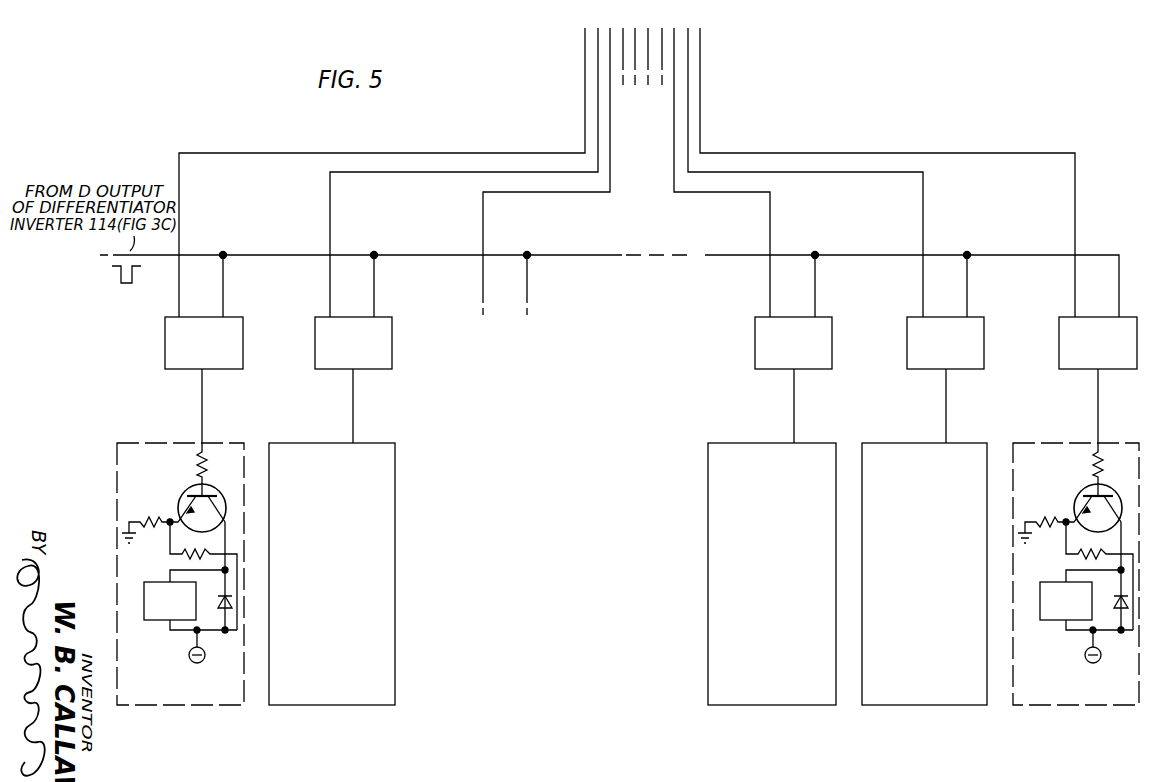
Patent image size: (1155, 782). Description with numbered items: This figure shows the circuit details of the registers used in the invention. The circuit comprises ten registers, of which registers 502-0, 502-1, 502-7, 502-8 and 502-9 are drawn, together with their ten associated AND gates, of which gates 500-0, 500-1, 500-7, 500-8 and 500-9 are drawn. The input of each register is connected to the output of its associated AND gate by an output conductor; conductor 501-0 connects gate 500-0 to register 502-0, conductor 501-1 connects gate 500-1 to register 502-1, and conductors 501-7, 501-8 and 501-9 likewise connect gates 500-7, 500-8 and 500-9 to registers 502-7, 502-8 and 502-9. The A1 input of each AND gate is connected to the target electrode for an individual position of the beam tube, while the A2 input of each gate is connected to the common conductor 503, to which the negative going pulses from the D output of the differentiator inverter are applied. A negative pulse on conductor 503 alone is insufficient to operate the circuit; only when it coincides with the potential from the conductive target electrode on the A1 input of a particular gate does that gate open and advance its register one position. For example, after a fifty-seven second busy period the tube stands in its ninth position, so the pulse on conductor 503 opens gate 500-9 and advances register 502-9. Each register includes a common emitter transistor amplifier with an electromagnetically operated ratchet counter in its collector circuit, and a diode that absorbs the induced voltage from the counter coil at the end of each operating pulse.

The conductor 503 is at (271, 254).
The AND gate 500-0 is at (165, 358).
The AND gate 500-1 is at (392, 349).
The AND gate 500-7 is at (755, 343).
The AND gate 500-8 is at (907, 358).
The AND gate 500-9 is at (1059, 358).
The conductor 501-0 is at (202, 408).
The conductor 501-1 is at (353, 410).
The conductor 501-7 is at (794, 410).
The conductor 501-8 is at (946, 412).
The conductor 501-9 is at (1098, 410).
The register 502-0 is at (180, 596).
The register 502-1 is at (305, 706).
The register 502-7 is at (732, 706).
The register 502-8 is at (882, 706).
The register 502-9 is at (1076, 596).